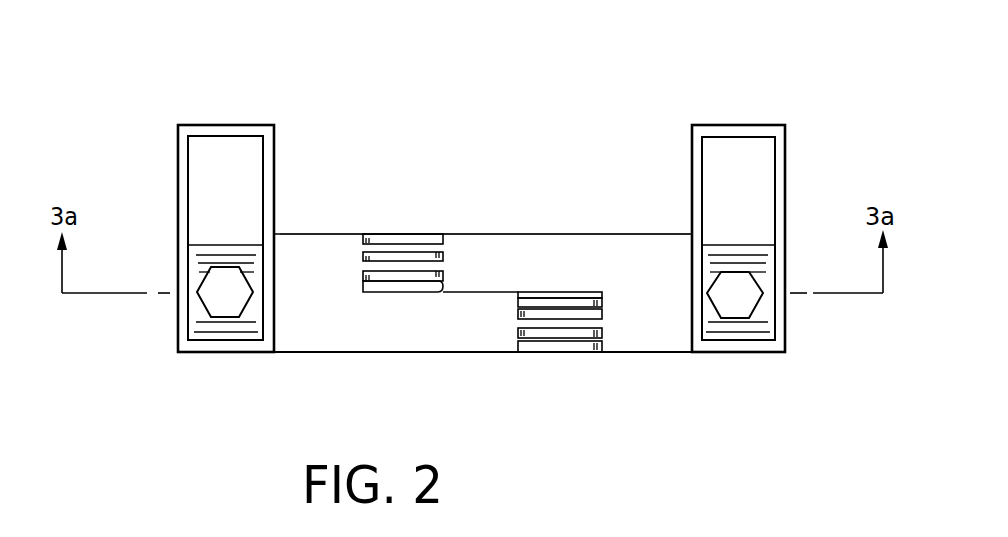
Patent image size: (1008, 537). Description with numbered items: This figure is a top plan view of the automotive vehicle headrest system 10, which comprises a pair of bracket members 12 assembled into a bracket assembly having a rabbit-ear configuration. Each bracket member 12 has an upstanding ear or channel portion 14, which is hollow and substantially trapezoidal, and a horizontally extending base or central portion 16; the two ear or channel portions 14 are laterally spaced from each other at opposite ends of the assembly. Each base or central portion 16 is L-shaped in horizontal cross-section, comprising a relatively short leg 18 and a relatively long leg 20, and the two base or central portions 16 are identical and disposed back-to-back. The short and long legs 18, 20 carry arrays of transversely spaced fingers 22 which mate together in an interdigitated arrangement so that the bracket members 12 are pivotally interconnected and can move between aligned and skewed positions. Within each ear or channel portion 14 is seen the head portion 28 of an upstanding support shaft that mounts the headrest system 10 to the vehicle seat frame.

The automotive vehicle headrest system 10 is at (556, 122).
The bracket member 12 is at (178, 352).
The upstanding ear or channel portion 14 is at (275, 147).
The horizontally extending base or central portion 16 is at (393, 352).
The relatively short leg 18 is at (317, 238).
The relatively long leg 20 is at (572, 255).
The fingers 22 is at (403, 237).
The head portion 28 is at (215, 295).